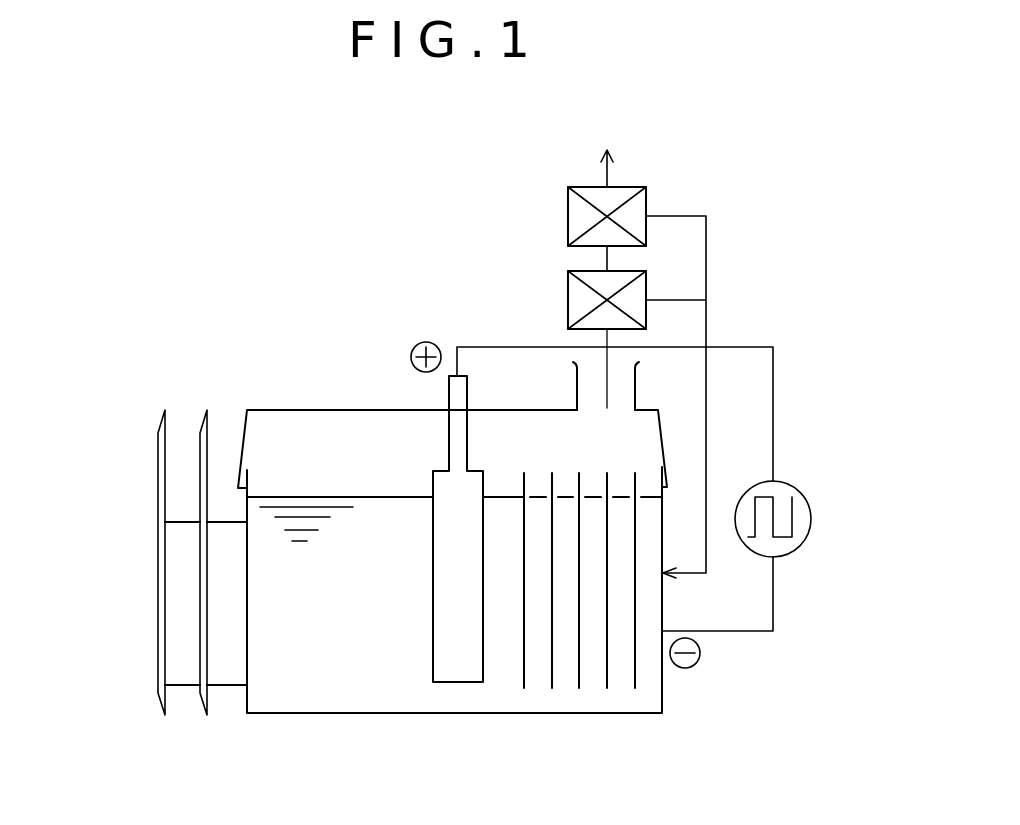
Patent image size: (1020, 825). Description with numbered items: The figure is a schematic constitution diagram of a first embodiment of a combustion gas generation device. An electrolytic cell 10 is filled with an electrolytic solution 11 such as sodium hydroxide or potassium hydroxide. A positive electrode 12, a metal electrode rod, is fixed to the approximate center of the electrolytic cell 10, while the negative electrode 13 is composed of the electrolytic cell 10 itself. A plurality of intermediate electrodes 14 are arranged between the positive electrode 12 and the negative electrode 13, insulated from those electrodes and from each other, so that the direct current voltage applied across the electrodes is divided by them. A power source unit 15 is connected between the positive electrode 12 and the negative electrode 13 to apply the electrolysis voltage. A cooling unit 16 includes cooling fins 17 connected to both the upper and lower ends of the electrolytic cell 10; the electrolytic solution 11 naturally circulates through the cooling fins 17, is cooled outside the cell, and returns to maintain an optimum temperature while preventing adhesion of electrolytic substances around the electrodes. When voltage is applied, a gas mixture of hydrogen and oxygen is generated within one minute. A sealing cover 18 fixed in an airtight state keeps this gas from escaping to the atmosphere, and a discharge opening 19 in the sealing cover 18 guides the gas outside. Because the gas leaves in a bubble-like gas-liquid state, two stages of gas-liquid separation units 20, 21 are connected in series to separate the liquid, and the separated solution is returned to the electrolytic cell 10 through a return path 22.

The electrolytic cell 10 is at (454, 627).
The electrolytic solution 11 is at (377, 508).
The positive electrode 12 is at (440, 610).
The negative electrode 13 is at (407, 713).
The intermediate electrodes 14 is at (604, 678).
The power source unit 15 is at (794, 482).
The cooling unit 16 is at (161, 562).
The cooling fins 17 is at (157, 457).
The sealing cover 18 is at (310, 408).
The discharge opening 19 is at (630, 383).
The gas-liquid separation unit 20 is at (566, 301).
The gas-liquid separation unit 21 is at (566, 218).
The return path 22 is at (708, 270).